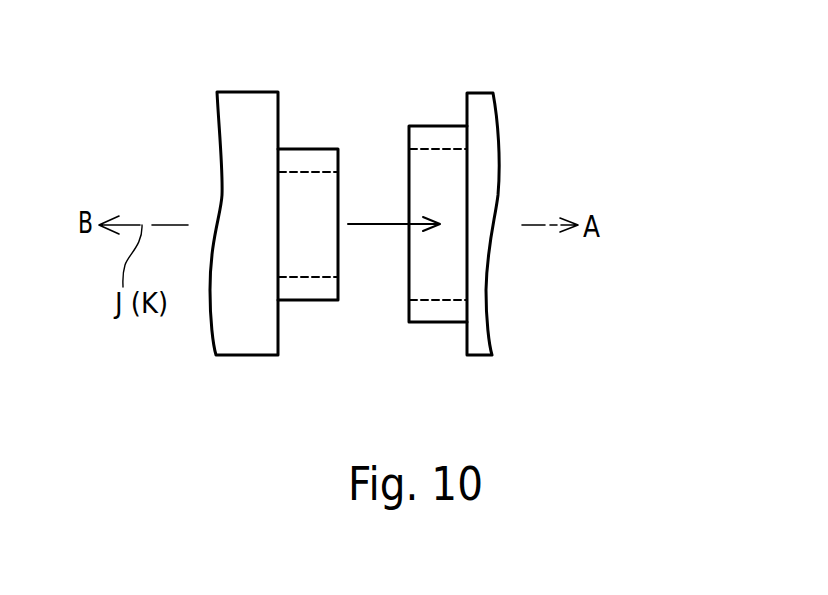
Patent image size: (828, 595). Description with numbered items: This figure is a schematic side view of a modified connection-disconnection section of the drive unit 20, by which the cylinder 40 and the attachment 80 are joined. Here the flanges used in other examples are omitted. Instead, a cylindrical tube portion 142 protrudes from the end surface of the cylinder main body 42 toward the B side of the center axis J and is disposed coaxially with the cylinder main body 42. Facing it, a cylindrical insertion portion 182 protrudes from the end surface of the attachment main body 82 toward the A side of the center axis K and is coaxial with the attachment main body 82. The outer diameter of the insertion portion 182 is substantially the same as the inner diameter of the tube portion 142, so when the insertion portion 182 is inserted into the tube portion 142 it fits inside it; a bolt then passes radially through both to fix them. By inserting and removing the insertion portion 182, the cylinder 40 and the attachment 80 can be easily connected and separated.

The drive unit 20 is at (639, 47).
The attachment 80 is at (206, 52).
The attachment main body 82 is at (247, 92).
The insertion portion 182 is at (305, 302).
The cylinder 40 is at (526, 80).
The cylinder main body 42 is at (482, 92).
The tube portion 142 is at (439, 323).